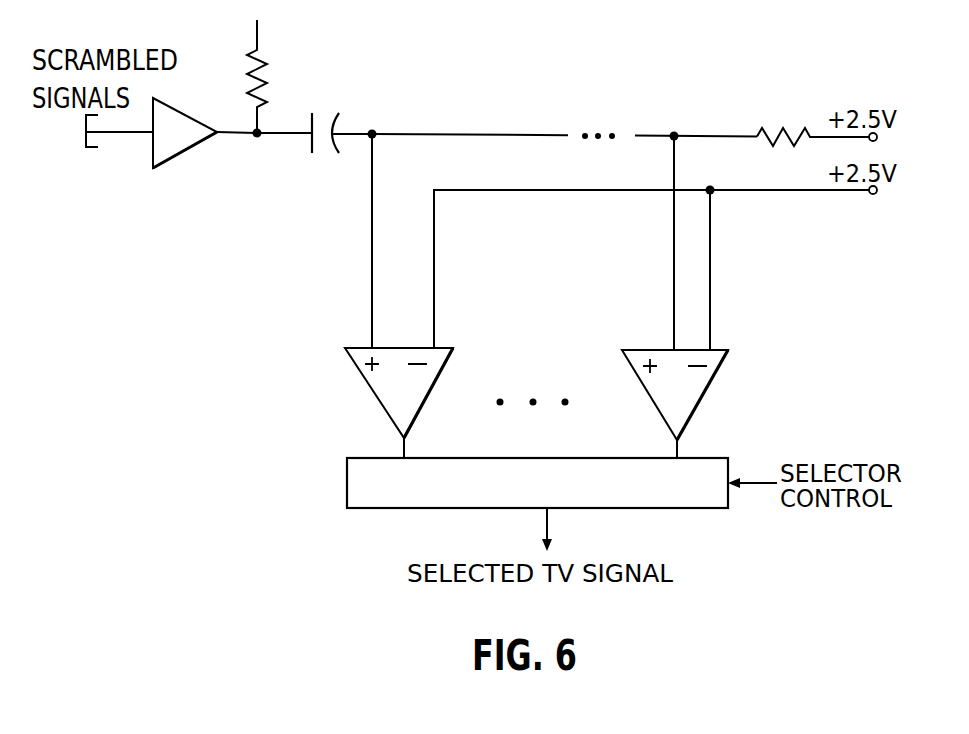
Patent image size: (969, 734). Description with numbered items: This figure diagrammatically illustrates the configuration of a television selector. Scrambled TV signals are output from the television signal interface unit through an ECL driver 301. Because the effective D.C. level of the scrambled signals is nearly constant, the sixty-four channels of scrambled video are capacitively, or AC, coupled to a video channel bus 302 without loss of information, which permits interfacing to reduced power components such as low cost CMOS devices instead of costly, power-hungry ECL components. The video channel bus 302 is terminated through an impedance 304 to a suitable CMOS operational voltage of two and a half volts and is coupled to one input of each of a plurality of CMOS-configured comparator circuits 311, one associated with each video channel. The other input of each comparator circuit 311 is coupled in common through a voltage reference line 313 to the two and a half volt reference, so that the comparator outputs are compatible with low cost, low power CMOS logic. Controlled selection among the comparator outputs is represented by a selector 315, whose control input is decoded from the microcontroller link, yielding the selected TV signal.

The ECL driver 301 is at (188, 94).
The video channel bus 302 is at (456, 135).
The impedance 304 is at (783, 130).
The comparator circuit 311 is at (360, 367).
The voltage reference line 313 is at (434, 293).
The selector 315 is at (718, 457).